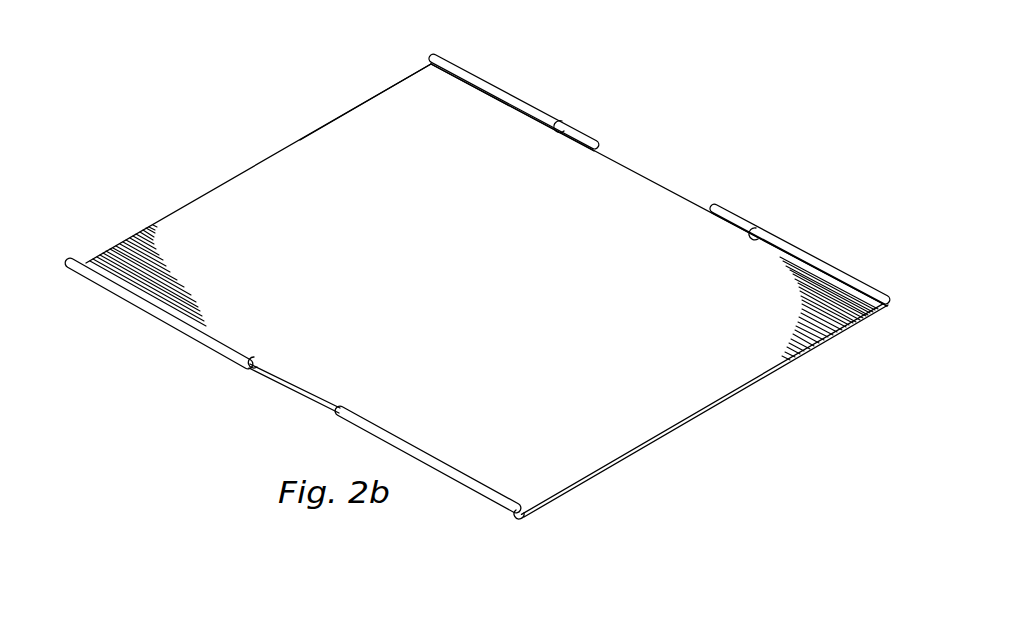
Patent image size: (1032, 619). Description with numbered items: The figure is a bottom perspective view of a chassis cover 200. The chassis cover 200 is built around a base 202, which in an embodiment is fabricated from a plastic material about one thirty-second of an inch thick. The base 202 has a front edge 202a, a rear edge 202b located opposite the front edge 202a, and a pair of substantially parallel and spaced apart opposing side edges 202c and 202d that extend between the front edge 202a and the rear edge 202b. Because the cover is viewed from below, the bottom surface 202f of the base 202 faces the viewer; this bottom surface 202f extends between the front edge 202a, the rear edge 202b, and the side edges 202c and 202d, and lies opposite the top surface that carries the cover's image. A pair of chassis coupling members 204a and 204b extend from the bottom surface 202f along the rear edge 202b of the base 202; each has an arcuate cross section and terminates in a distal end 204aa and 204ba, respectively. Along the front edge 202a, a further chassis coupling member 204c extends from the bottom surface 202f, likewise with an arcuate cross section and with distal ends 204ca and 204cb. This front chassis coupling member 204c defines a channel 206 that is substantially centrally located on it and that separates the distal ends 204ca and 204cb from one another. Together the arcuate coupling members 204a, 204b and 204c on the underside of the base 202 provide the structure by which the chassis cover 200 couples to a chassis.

The chassis cover 200 is at (664, 70).
The base 202 is at (487, 288).
The front edge 202a is at (326, 403).
The rear edge 202b is at (651, 182).
The side edge 202c is at (690, 427).
The side edge 202d is at (208, 192).
The bottom surface 202f is at (360, 117).
The chassis coupling member 204a is at (477, 72).
The distal end 204aa is at (558, 121).
The chassis coupling member 204b is at (798, 250).
The distal end 204ba is at (754, 228).
The chassis coupling member 204c is at (189, 331).
The distal end 204ca is at (258, 358).
The distal end 204cb is at (518, 511).
The channel 206 is at (304, 381).